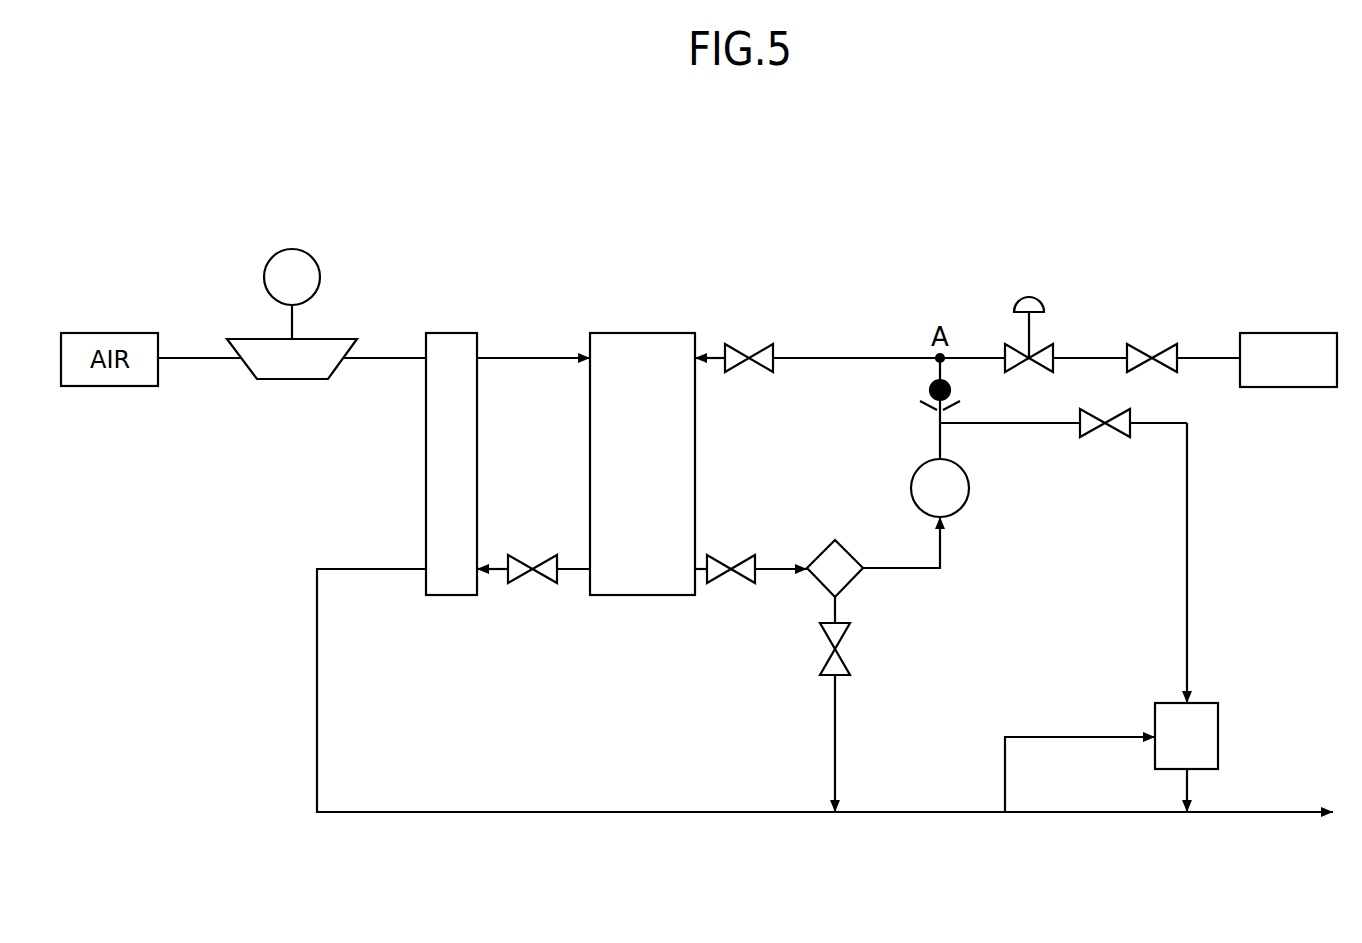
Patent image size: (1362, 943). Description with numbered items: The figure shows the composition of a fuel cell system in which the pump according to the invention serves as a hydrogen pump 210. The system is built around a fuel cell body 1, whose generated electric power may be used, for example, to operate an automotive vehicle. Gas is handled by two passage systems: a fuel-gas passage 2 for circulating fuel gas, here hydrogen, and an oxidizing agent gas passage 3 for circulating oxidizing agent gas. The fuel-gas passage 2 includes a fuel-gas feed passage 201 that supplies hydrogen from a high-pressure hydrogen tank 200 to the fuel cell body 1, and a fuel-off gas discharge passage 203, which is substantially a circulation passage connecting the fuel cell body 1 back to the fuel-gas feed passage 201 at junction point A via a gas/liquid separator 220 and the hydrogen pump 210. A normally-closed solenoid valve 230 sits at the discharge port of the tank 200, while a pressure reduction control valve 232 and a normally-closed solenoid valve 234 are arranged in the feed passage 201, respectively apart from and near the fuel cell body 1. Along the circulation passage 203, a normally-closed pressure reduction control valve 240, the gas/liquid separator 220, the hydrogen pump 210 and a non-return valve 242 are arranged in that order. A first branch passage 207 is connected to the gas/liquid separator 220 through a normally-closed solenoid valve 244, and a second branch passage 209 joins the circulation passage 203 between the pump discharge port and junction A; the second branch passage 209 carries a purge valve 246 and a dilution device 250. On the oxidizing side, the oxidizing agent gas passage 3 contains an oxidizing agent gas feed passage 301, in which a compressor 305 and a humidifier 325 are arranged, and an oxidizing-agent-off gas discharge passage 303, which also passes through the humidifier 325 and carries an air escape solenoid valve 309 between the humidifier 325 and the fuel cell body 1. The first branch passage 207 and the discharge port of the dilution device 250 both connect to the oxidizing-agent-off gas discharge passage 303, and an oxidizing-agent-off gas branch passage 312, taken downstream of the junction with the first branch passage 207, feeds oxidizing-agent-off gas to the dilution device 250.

The fuel cell body 1 is at (655, 333).
The fuel-gas passage 2 is at (987, 320).
The oxidizing agent gas passage 3 is at (357, 292).
The high-pressure hydrogen tank 200 is at (1293, 333).
The fuel-gas feed passage 201 is at (830, 358).
The fuel-off gas discharge passage 203 is at (943, 548).
The first branch passage 207 is at (836, 748).
The second branch passage 209 is at (1189, 575).
The hydrogen pump 210 is at (970, 488).
The gas/liquid separator 220 is at (850, 553).
The normally-closed solenoid valve 230 is at (1151, 357).
The pressure reduction control valve 232 is at (1053, 348).
The normally-closed solenoid valve 234 is at (727, 345).
The normally-closed pressure reduction control valve 240 is at (720, 568).
The non-return valve 242 is at (929, 392).
The normally-closed solenoid valve 244 is at (840, 652).
The normally-closed solenoid valve (purge valve) 246 is at (1130, 416).
The dilution device 250 is at (1203, 703).
The oxidizing agent gas feed passage 301 is at (390, 357).
The oxidizing-agent-off gas discharge passage 303 is at (316, 588).
The compressor 305 is at (292, 249).
The solenoid valve (air escape valve) 309 is at (532, 568).
The oxidizing-agent-off gas branch passage 312 is at (1065, 737).
The humidifier 325 is at (457, 333).